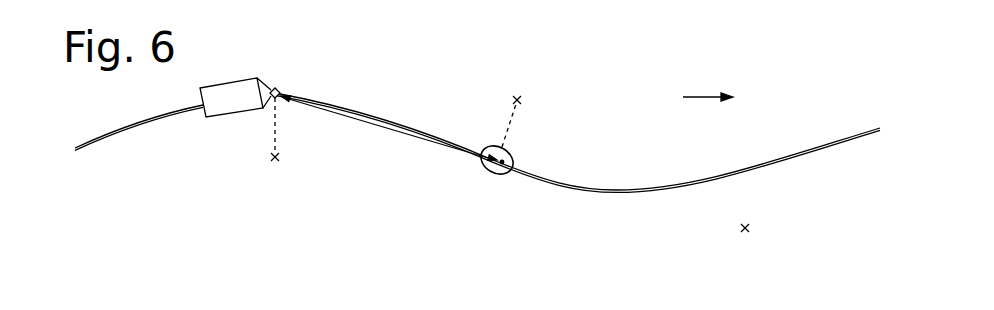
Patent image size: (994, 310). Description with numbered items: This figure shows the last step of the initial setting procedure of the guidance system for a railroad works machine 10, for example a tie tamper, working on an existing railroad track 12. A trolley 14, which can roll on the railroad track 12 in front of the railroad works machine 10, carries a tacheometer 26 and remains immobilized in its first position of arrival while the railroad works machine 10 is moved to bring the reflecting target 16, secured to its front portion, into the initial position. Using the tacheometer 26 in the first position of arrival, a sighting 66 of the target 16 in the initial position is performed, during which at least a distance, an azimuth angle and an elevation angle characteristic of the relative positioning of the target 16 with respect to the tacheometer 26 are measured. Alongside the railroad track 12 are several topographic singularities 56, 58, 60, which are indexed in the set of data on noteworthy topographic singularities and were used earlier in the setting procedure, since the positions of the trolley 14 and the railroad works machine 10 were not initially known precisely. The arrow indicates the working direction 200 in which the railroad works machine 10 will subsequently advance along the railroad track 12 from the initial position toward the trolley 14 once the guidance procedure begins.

The railroad works machine 10 is at (207, 115).
The railroad track 12 is at (793, 153).
The trolley 14 is at (487, 172).
The reflecting target 16 is at (273, 83).
The tacheometer 26 is at (507, 175).
The topographic singularity 56 is at (270, 158).
The topographic singularity 58 is at (523, 100).
The topographic singularity 60 is at (747, 228).
The sighting 66 is at (372, 127).
The working direction 200 is at (707, 98).